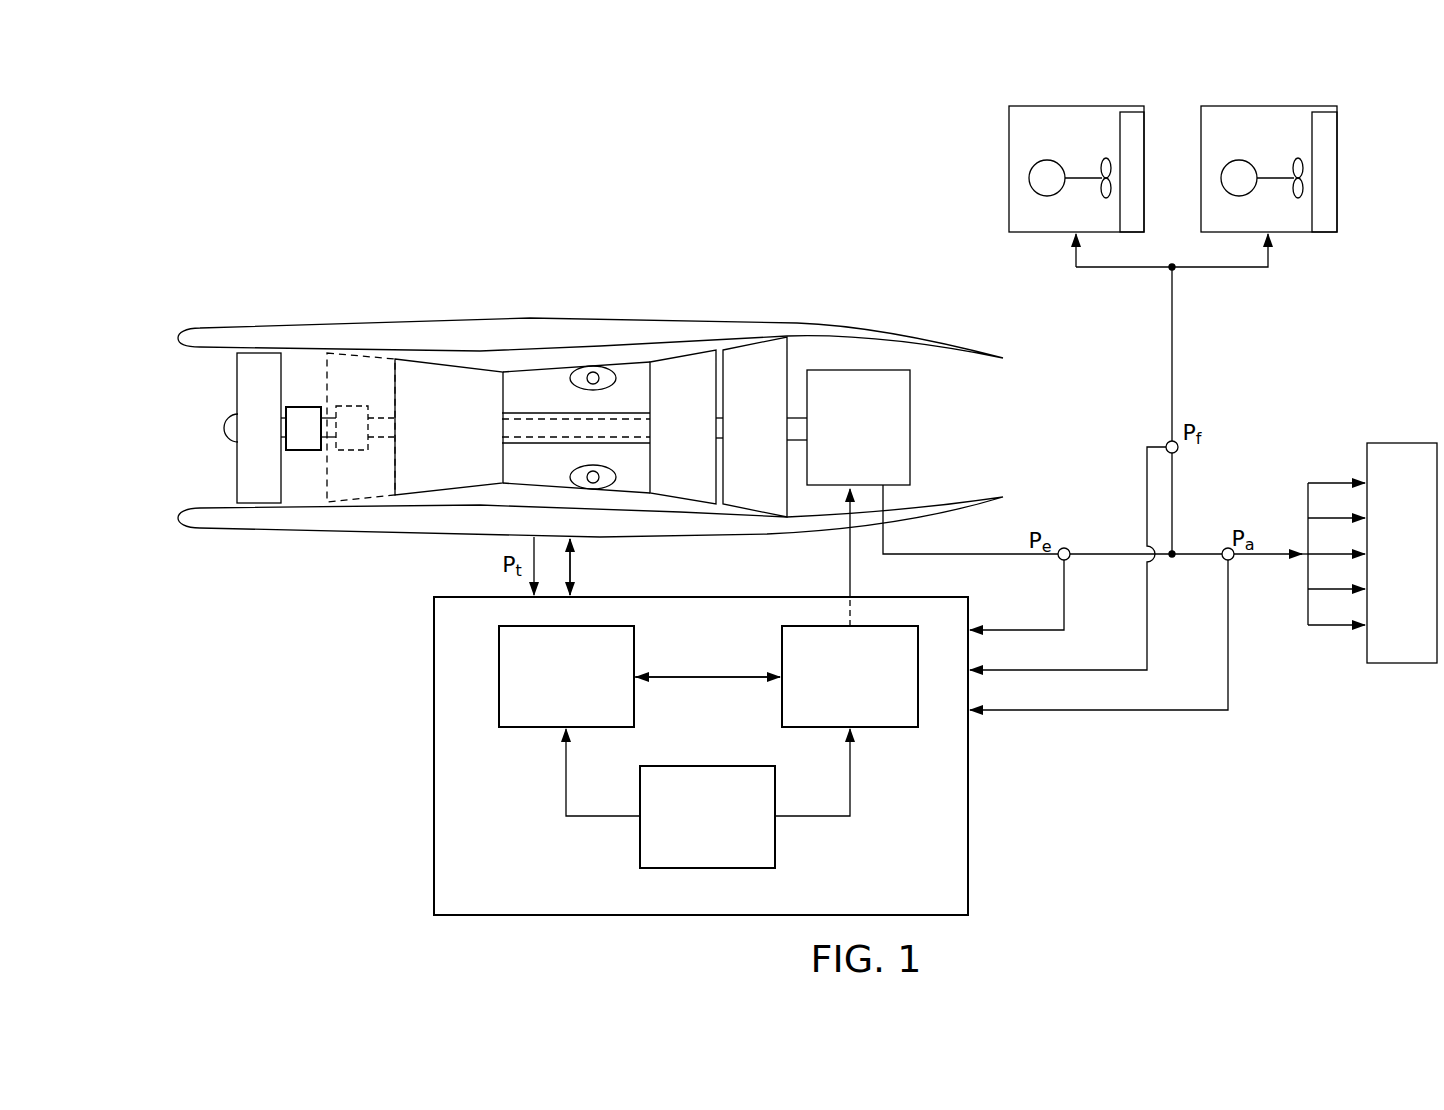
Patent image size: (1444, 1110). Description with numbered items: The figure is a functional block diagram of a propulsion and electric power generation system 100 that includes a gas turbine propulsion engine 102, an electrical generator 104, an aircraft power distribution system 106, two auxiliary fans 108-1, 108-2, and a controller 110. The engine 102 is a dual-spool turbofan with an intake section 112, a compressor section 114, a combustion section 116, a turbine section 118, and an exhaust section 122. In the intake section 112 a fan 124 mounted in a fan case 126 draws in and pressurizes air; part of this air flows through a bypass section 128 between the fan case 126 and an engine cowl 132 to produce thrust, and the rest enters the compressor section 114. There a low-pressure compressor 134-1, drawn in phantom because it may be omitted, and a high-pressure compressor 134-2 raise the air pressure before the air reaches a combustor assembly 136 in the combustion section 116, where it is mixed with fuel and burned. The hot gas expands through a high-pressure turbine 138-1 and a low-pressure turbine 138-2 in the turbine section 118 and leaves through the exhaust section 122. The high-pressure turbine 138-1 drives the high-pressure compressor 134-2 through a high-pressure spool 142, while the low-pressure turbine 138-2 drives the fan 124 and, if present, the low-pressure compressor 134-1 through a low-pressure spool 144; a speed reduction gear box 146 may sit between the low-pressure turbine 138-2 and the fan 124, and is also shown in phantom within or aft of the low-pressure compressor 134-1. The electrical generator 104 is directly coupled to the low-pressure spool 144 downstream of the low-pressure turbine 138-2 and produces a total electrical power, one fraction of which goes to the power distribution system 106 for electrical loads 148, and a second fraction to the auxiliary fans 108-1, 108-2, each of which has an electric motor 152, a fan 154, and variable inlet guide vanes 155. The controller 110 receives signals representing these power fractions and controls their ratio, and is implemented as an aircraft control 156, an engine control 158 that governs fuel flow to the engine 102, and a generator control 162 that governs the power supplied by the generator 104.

The propulsion and electric power generation system 100 is at (196, 200).
The gas turbine propulsion engine 102 is at (170, 330).
The electrical generator 104 is at (889, 362).
The aircraft power distribution system 106 is at (1384, 539).
The auxiliary fan 108-1 is at (1068, 143).
The auxiliary fan 108-2 is at (1338, 130).
The controller 110 is at (649, 756).
The intake section 112 is at (270, 241).
The compressor section 114 is at (420, 241).
The combustion section 116 is at (595, 241).
The turbine section 118 is at (719, 241).
The exhaust section 122 is at (898, 241).
The fan 124 is at (258, 350).
The fan case 126 is at (207, 328).
The bypass section 128 is at (492, 360).
The engine cowl 132 is at (535, 362).
The low-pressure compressor 134-1 is at (332, 503).
The high-pressure compressor 134-2 is at (452, 482).
The combustor assembly 136 is at (593, 366).
The high-pressure turbine 138-1 is at (688, 497).
The low-pressure turbine 138-2 is at (757, 508).
The high-pressure spool 142 is at (640, 443).
The low-pressure spool 144 is at (395, 428).
The speed reduction gear box 146 is at (303, 407).
The electrical loads 148 is at (1400, 664).
The electric motor 152 is at (1028, 177).
The fan 154 is at (1103, 190).
The variable inlet guide vanes 155 is at (1145, 128).
The aircraft control 156 is at (640, 842).
The engine control 158 is at (525, 729).
The generator control 162 is at (886, 729).